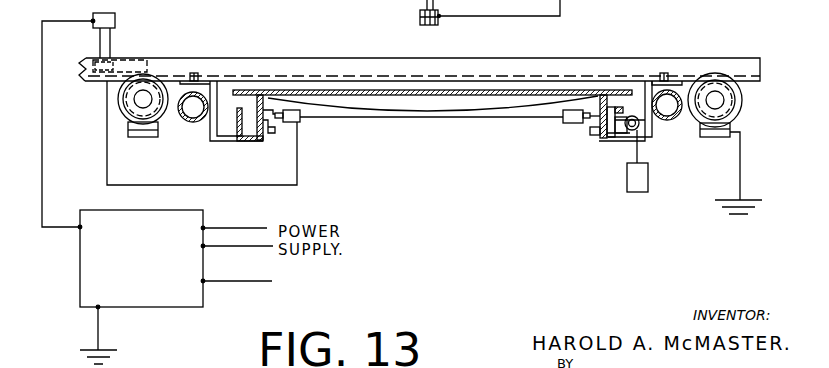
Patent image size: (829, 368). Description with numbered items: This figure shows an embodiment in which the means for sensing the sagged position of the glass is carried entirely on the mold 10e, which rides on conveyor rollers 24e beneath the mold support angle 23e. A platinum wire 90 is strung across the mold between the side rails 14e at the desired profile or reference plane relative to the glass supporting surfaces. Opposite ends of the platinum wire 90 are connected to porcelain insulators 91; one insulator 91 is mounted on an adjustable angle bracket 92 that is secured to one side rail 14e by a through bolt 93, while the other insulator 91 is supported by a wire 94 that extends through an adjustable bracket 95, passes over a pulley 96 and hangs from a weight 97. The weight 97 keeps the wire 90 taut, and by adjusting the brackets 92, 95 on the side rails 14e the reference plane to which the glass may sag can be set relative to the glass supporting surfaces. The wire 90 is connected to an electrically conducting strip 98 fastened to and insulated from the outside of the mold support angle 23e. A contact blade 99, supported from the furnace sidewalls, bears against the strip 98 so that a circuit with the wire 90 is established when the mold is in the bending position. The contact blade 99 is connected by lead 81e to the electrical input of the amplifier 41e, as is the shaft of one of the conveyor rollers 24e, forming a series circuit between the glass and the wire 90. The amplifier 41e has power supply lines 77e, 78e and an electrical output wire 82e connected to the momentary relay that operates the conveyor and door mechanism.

The mold support angle 23e is at (743, 60).
The conveyor roller 24e is at (737, 103).
The contact blade 99 is at (115, 33).
The electrically conducting strip 98 is at (117, 62).
The wire lead 81e is at (42, 193).
The mold 10e is at (208, 138).
The side rails 14e is at (267, 98).
The adjustable angle bracket 92 is at (270, 130).
The through bolt 93 is at (275, 130).
The porcelain insulators 91 is at (297, 120).
The platinum wire 90 is at (368, 118).
The wire 94 is at (592, 120).
The adjustable bracket 95 is at (585, 138).
The pulley 96 is at (633, 130).
The weight 97 is at (637, 192).
The amplifier 41e is at (125, 309).
The power supply line 77e is at (218, 225).
The power supply line 78e is at (213, 250).
The electrical output wire 82e is at (213, 285).